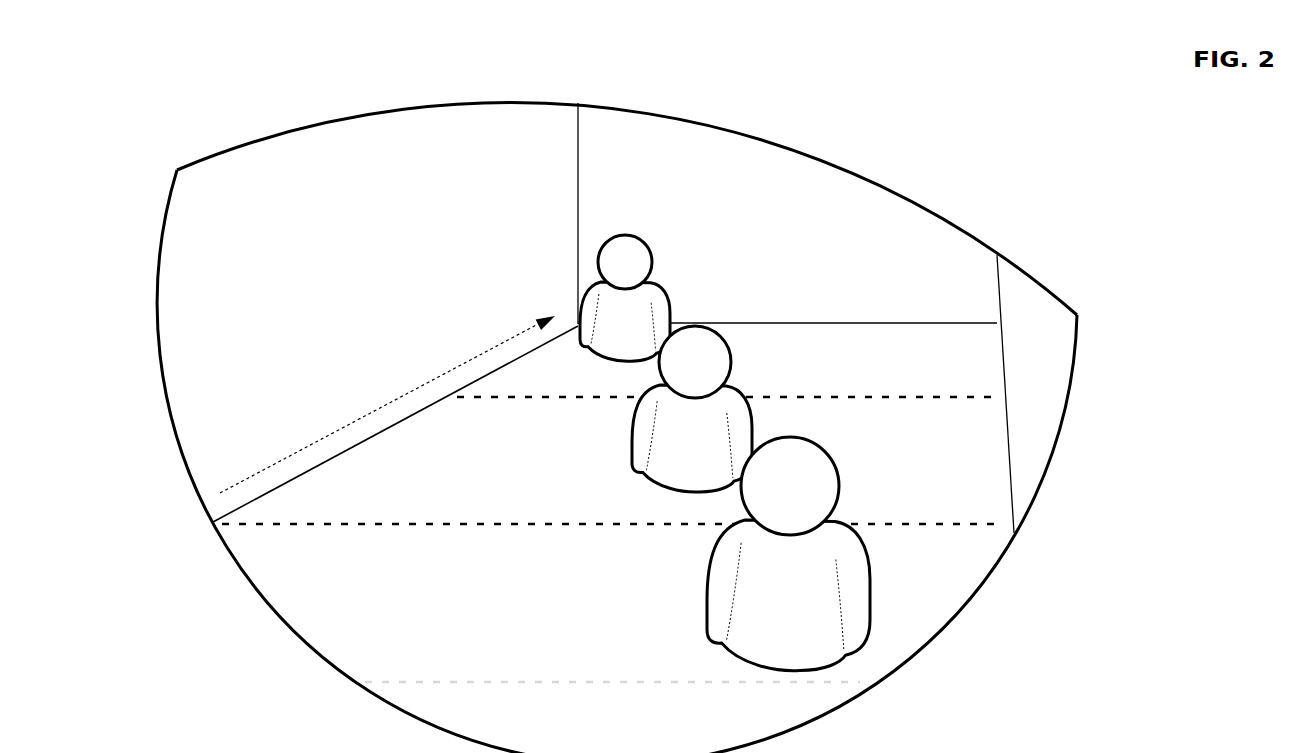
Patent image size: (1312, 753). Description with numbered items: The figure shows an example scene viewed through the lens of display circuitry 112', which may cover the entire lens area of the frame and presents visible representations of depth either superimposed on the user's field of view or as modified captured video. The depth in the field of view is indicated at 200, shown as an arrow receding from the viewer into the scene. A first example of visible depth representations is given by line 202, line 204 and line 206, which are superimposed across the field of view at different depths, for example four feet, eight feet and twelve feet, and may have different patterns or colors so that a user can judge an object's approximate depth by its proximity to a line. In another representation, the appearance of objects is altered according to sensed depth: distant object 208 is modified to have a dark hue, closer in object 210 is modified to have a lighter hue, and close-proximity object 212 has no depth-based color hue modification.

The display circuitry 112' is at (617, 428).
The depth in the field of view 200 is at (386, 405).
The line 202 is at (898, 392).
The line 204 is at (507, 524).
The line 206 is at (385, 682).
The distant object 208 is at (661, 284).
The closer in object 210 is at (738, 392).
The close-proximity object 212 is at (842, 530).